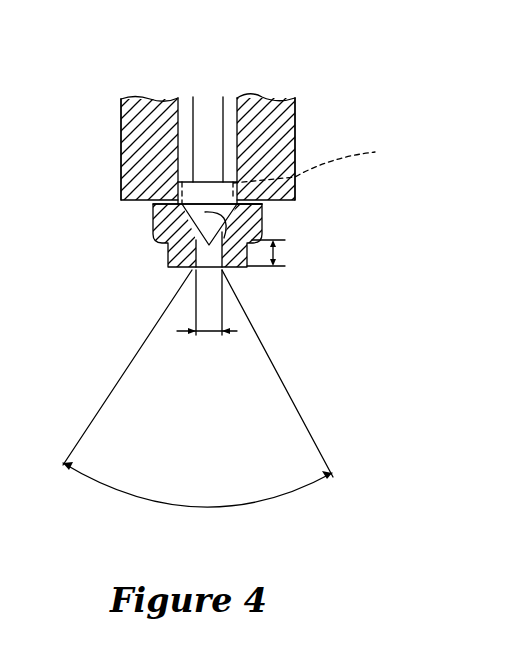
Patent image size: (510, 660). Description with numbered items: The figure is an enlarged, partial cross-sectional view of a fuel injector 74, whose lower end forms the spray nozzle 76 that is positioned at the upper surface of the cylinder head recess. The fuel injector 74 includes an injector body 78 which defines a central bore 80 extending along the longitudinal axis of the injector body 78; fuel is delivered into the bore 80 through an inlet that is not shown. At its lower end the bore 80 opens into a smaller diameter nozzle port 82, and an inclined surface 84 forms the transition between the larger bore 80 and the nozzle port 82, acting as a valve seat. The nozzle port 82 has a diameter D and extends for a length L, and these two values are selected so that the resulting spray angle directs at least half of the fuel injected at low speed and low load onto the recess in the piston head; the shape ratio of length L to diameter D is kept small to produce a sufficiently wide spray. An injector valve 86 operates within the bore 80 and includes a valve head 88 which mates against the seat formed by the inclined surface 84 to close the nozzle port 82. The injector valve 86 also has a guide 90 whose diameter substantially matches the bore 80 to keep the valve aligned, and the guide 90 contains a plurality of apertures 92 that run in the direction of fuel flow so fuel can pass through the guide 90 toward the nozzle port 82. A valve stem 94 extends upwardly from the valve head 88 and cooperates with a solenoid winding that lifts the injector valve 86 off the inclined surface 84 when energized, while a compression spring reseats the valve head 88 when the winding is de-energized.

The fuel injector 74 is at (294, 75).
The spray nozzle 76 is at (140, 278).
The injector body 78 is at (295, 127).
The central bore 80 is at (180, 138).
The nozzle port 82 is at (197, 212).
The inclined surface 84 is at (262, 206).
The injector valve 86 is at (212, 133).
The valve head 88 is at (184, 201).
The guide 90 is at (200, 188).
The apertures 92 is at (297, 171).
The valve stem 94 is at (206, 107).
The length L is at (282, 250).
The diameter D is at (208, 335).